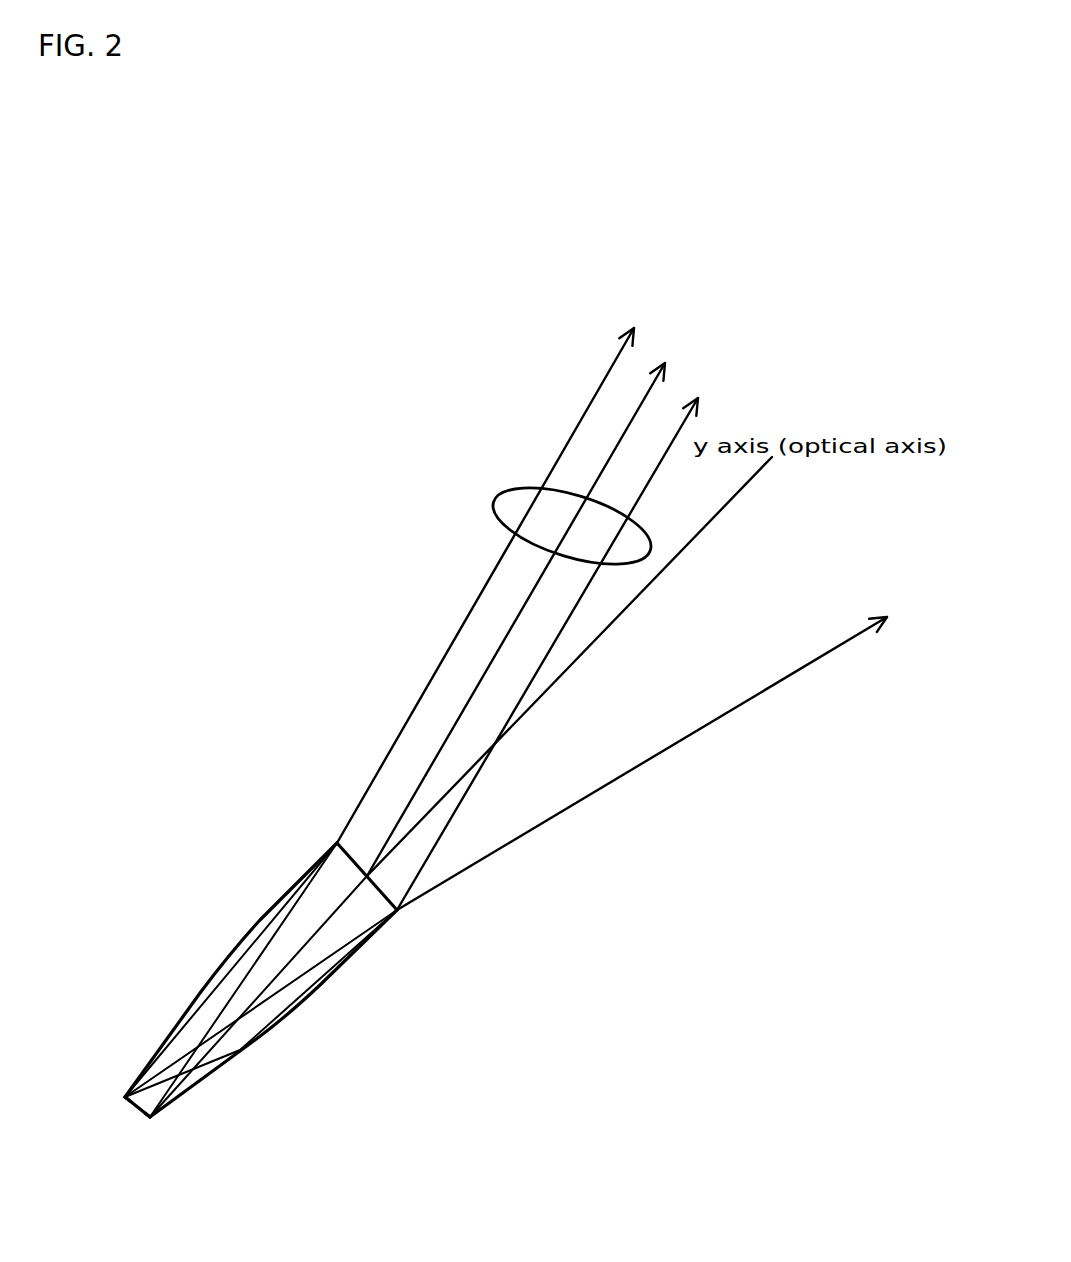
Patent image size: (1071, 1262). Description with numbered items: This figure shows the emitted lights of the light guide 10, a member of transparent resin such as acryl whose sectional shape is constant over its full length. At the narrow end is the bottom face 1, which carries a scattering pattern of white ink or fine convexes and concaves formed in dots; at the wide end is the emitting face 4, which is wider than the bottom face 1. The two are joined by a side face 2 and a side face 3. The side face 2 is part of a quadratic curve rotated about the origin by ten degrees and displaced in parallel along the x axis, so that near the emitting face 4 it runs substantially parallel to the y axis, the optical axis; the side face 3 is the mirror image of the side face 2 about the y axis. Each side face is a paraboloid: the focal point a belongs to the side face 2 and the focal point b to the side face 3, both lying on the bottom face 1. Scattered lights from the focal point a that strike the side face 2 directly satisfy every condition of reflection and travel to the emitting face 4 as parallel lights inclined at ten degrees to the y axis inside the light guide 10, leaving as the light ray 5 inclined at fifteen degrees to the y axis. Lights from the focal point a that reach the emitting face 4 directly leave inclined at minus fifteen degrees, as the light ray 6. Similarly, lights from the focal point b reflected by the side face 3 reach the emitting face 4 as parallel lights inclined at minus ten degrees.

The bottom face 1 is at (135, 1116).
The side face 2 is at (283, 1020).
The side face 3 is at (215, 966).
The emitting face 4 is at (357, 858).
The light ray 5 is at (493, 502).
The light ray 6 is at (722, 720).
The light guide 10 is at (260, 952).
The focal point a is at (121, 1099).
The focal point b is at (147, 1125).